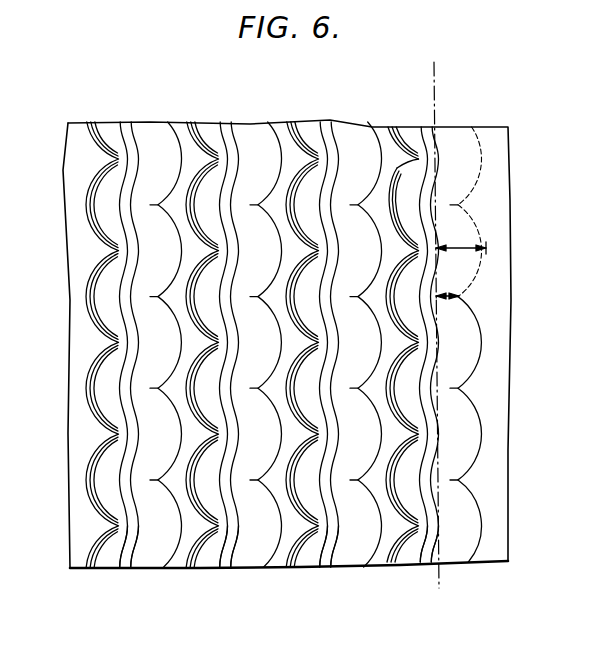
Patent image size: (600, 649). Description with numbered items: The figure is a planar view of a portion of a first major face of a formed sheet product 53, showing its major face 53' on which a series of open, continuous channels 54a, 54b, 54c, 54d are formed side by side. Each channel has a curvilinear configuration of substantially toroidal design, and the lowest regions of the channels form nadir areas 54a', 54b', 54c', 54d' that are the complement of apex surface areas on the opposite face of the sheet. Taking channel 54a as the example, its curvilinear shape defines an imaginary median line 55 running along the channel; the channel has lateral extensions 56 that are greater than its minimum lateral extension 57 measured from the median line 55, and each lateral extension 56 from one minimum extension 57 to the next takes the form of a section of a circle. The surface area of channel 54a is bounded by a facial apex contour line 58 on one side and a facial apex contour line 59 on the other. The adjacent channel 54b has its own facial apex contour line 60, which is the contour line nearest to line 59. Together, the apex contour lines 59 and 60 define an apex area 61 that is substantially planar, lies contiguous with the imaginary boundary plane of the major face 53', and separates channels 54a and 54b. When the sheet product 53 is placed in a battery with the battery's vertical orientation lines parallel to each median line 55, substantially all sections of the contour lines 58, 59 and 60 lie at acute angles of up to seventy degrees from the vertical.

The formed sheet product 53 is at (278, 324).
The major face 53' is at (54, 345).
The channel 54a is at (444, 315).
The channel 54b is at (334, 329).
The channel 54c is at (234, 344).
The channel 54d is at (134, 344).
The nadir area of channel 54a 54a' is at (444, 574).
The nadir area of channel 54b 54b' is at (339, 574).
The nadir area of channel 54c 54c' is at (231, 574).
The nadir area of channel 54d 54d' is at (141, 574).
The imaginary median line 55 is at (437, 92).
The lateral extension 56 is at (462, 246).
The minimum lateral extension 57 is at (444, 288).
The facial apex contour line 58 is at (480, 148).
The facial apex contour line 59 is at (431, 158).
The facial apex contour line 60 is at (361, 329).
The apex area 61 is at (389, 157).